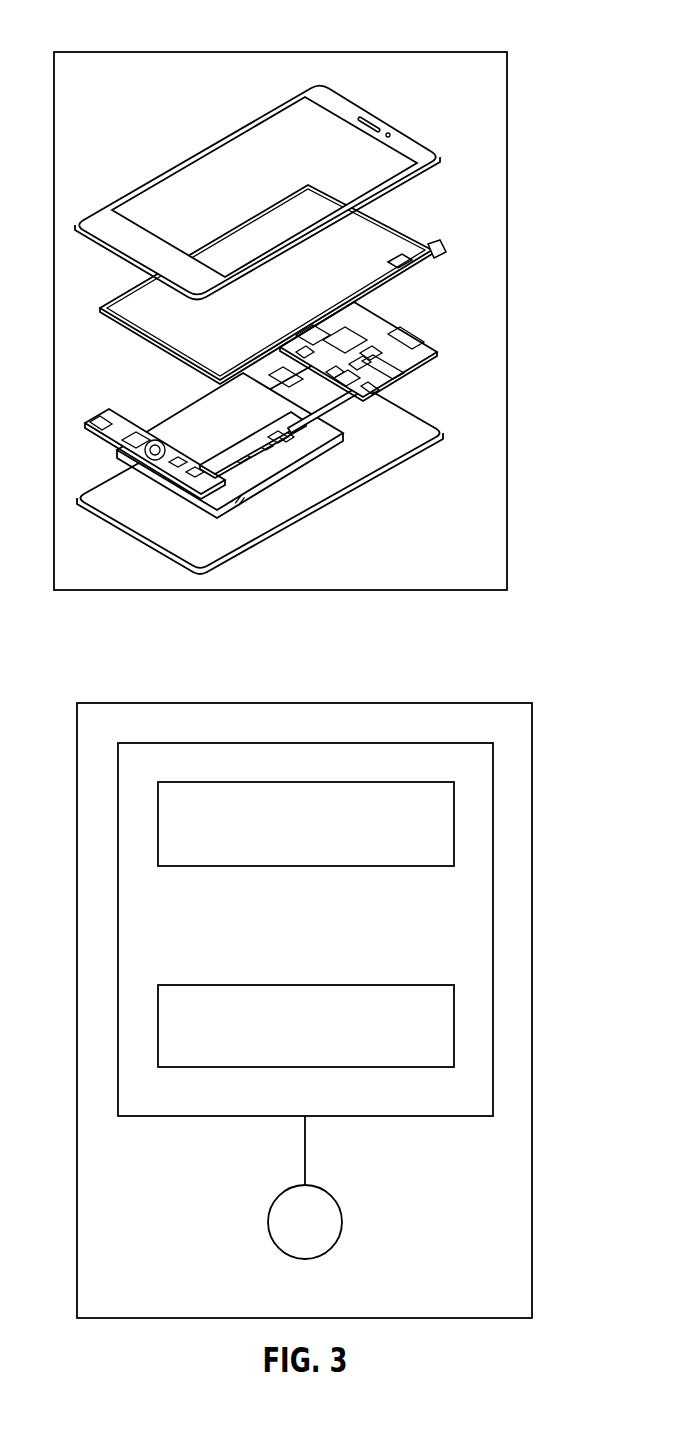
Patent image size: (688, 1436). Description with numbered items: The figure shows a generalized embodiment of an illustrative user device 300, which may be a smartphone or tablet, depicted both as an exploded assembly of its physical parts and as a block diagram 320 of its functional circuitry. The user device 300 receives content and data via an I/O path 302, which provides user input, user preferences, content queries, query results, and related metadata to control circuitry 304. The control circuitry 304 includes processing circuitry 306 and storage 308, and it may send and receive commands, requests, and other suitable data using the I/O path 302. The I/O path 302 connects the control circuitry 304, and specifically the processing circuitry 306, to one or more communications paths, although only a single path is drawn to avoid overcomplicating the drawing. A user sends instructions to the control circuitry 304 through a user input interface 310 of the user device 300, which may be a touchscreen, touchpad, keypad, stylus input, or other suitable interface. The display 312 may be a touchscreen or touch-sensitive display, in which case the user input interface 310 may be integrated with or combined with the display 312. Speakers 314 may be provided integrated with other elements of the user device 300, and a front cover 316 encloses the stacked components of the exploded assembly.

The user device 300 is at (150, 45).
The I/O path 302 is at (139, 449).
The control circuitry 304 is at (415, 392).
The processing circuitry 306 is at (409, 380).
The storage 308 is at (393, 361).
The user input interface 310 is at (397, 165).
The display 312 is at (396, 259).
The speakers 314 is at (363, 113).
The front cover / housing 316 is at (335, 150).
The user equipment system block diagram 320 is at (150, 703).